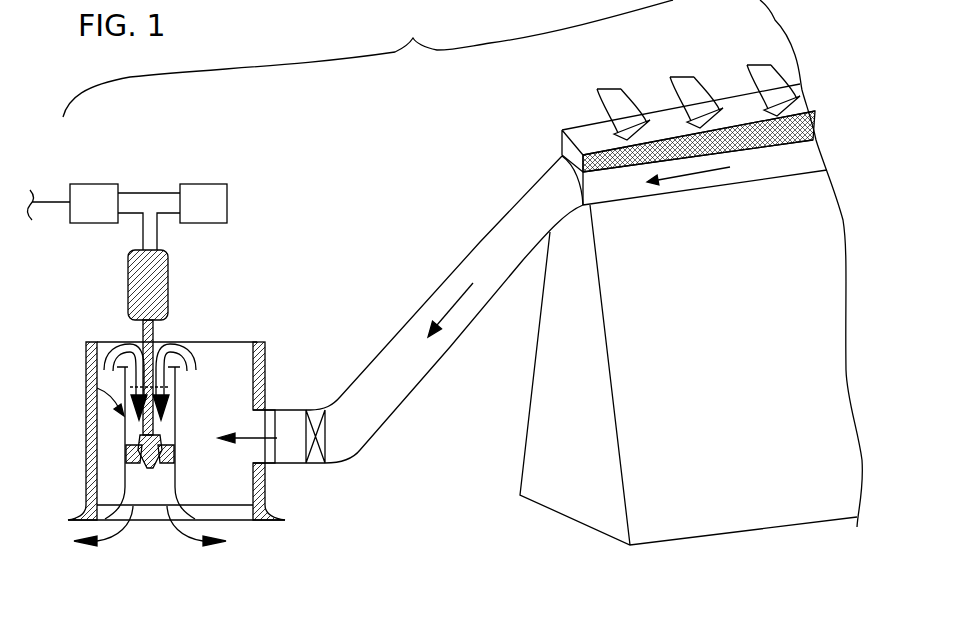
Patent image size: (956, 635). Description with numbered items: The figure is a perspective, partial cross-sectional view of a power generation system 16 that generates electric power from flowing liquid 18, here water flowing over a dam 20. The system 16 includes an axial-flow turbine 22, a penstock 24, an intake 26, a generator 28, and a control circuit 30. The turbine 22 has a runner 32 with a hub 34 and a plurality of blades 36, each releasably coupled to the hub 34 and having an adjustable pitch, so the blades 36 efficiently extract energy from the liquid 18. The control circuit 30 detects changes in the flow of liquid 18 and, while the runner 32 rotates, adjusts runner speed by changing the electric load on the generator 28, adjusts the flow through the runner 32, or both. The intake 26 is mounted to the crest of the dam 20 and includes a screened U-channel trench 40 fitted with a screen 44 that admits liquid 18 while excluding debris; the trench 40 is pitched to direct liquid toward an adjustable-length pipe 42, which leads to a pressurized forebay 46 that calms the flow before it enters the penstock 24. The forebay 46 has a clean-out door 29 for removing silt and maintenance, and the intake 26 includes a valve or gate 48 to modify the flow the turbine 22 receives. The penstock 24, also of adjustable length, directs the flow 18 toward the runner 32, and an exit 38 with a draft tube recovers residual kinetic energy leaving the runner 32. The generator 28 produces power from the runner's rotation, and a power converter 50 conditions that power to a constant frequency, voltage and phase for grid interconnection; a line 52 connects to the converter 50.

The power generation system 16 is at (413, 38).
The flowing liquid 18 is at (112, 345).
The dam 20 is at (560, 147).
The axial-flow turbine 22 is at (133, 518).
The penstock 24 is at (100, 392).
The intake 26 is at (268, 352).
The generator 28 is at (170, 283).
The clean-out door 29 is at (83, 487).
The control circuit 30 is at (203, 183).
The runner 32 is at (82, 477).
The hub 34 is at (160, 440).
The blades 36 is at (172, 449).
The exit 38 is at (180, 503).
The screened U-channel trench 40 is at (623, 203).
The pipe 42 is at (447, 353).
The screen 44 is at (808, 112).
The pressurized forebay 46 is at (258, 380).
The valve or gate 48 is at (325, 447).
The power converter 50 is at (97, 183).
The electrical line 52 is at (43, 207).